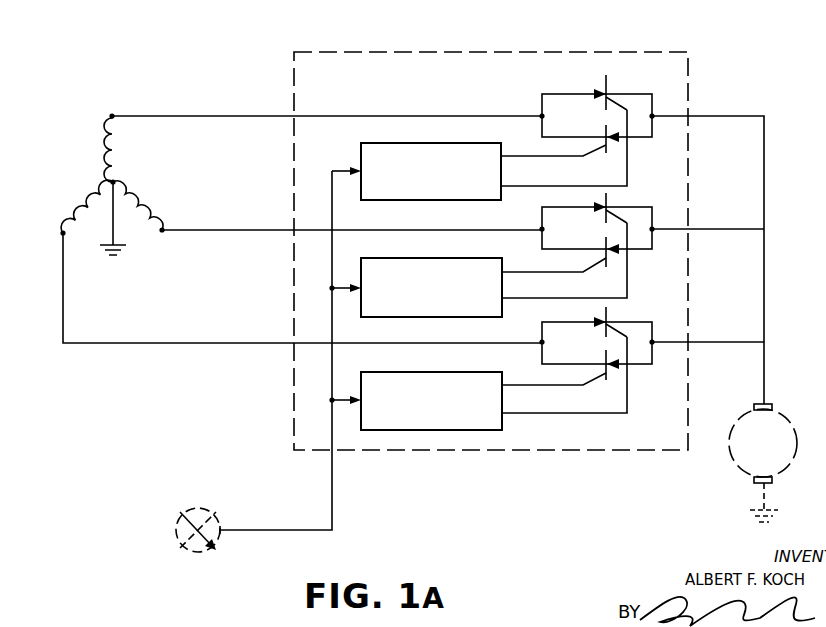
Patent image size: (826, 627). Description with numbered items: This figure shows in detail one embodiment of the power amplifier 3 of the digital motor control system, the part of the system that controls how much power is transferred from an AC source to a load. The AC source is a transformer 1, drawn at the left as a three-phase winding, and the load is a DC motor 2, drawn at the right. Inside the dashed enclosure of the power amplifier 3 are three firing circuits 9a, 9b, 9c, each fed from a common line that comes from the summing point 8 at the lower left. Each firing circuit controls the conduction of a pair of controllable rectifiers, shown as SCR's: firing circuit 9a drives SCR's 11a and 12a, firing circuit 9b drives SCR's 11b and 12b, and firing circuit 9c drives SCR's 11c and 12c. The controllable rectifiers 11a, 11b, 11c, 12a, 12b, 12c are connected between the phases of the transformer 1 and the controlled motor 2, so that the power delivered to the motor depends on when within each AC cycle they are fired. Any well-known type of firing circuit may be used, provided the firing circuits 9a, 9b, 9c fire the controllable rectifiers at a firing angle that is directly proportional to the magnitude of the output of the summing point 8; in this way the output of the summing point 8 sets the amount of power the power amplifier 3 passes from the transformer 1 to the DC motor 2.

The transformer 1 is at (102, 180).
The DC motor 2 is at (787, 423).
The power amplifier 3 is at (497, 52).
The summing point 8 is at (200, 509).
The firing circuit 9a is at (421, 143).
The firing circuit 9b is at (421, 258).
The firing circuit 9c is at (422, 372).
The SCR 11a is at (600, 80).
The SCR 11b is at (596, 205).
The SCR 11c is at (596, 319).
The SCR 12a is at (606, 130).
The SCR 12b is at (600, 240).
The SCR 12c is at (600, 354).